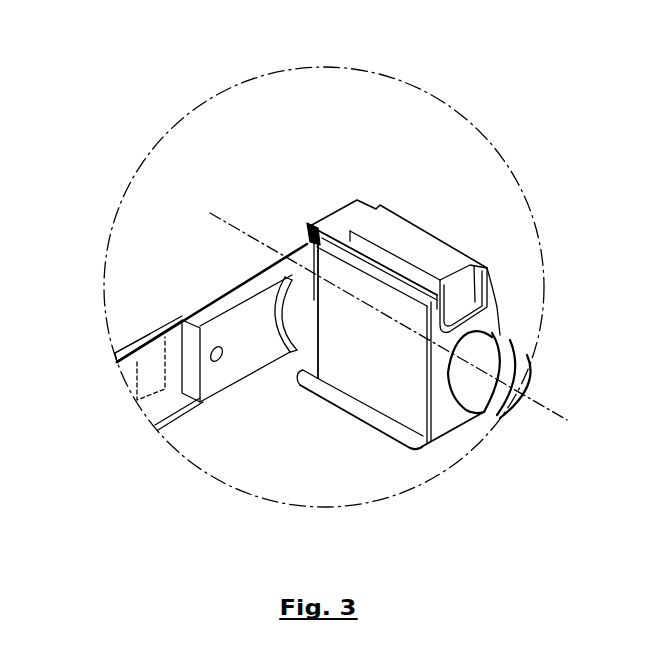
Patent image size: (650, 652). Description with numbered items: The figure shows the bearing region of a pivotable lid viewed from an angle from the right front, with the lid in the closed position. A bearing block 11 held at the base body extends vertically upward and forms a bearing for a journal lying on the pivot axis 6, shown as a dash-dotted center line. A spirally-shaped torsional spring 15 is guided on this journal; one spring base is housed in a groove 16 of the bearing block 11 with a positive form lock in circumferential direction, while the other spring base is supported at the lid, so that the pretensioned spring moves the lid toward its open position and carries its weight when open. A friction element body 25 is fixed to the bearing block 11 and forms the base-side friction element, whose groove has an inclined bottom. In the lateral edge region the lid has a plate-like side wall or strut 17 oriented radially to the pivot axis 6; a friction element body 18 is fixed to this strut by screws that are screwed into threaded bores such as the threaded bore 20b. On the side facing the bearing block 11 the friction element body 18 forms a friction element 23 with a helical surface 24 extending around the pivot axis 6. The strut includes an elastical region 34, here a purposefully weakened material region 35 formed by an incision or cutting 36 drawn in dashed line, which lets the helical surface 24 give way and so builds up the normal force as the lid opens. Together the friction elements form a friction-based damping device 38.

The damping device 38 is at (323, 178).
The pivot axis 6 is at (538, 405).
The bearing block 11 is at (443, 241).
The friction element body 25 is at (358, 216).
The groove 16 is at (407, 272).
The torsional spring 15 is at (515, 350).
The friction element body 18 is at (253, 360).
The threaded bore 20b is at (217, 346).
The elastical region 34 is at (175, 347).
The side wall or strut 17 is at (117, 360).
The incision or cutting 36 is at (137, 372).
The weakened material region 35 is at (165, 403).
The friction element 23 is at (302, 364).
The helical surface 24 is at (302, 364).